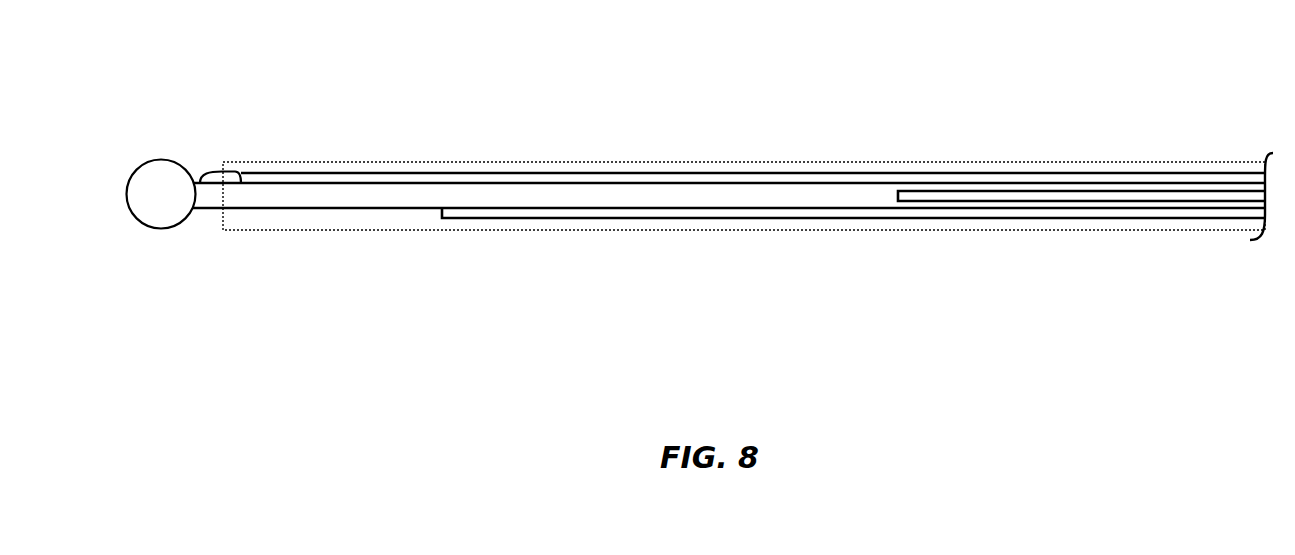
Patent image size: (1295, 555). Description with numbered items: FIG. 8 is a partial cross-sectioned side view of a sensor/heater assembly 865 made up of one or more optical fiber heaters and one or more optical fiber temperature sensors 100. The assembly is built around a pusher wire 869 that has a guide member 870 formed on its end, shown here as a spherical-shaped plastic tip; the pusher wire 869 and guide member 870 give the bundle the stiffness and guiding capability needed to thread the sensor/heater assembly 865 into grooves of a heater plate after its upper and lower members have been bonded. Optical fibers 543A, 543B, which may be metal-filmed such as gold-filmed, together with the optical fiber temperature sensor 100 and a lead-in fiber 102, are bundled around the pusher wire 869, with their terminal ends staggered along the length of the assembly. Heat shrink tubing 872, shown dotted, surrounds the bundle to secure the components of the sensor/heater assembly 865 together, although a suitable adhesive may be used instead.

The sensor/heater assembly 865 is at (785, 86).
The heat shrink tubing 872 is at (884, 162).
The guide member 870 is at (177, 226).
The pusher wire 869 is at (371, 198).
The optical fiber temperature sensor 100 is at (214, 158).
The lead-in fiber 102 is at (581, 178).
The optical fiber 543A is at (703, 214).
The optical fiber 543B is at (1039, 195).